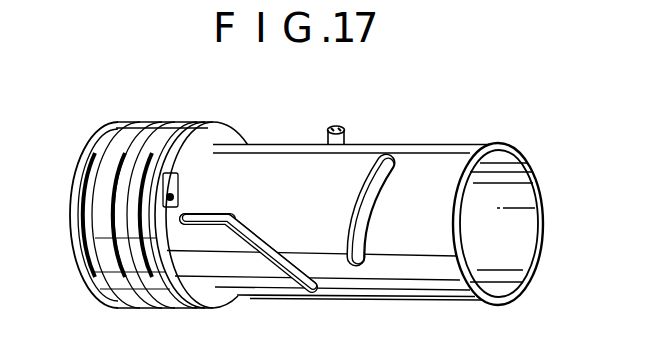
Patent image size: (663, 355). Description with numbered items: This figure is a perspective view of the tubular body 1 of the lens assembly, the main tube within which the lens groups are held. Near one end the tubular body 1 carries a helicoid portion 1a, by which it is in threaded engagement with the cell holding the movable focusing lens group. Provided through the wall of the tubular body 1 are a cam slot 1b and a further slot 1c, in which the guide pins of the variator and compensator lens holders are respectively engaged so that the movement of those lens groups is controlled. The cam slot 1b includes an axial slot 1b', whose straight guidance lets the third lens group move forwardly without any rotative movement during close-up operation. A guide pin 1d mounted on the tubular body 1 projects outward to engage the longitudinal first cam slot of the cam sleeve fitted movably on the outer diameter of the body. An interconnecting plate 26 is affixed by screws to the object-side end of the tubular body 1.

The tubular body 1 is at (437, 165).
The helicoid portion 1a is at (126, 300).
The cam slot 1b is at (250, 284).
The axial slot 1b' is at (207, 196).
The slot 1c is at (386, 155).
The guide pin 1d is at (335, 124).
The interconnecting plate 26 is at (214, 137).